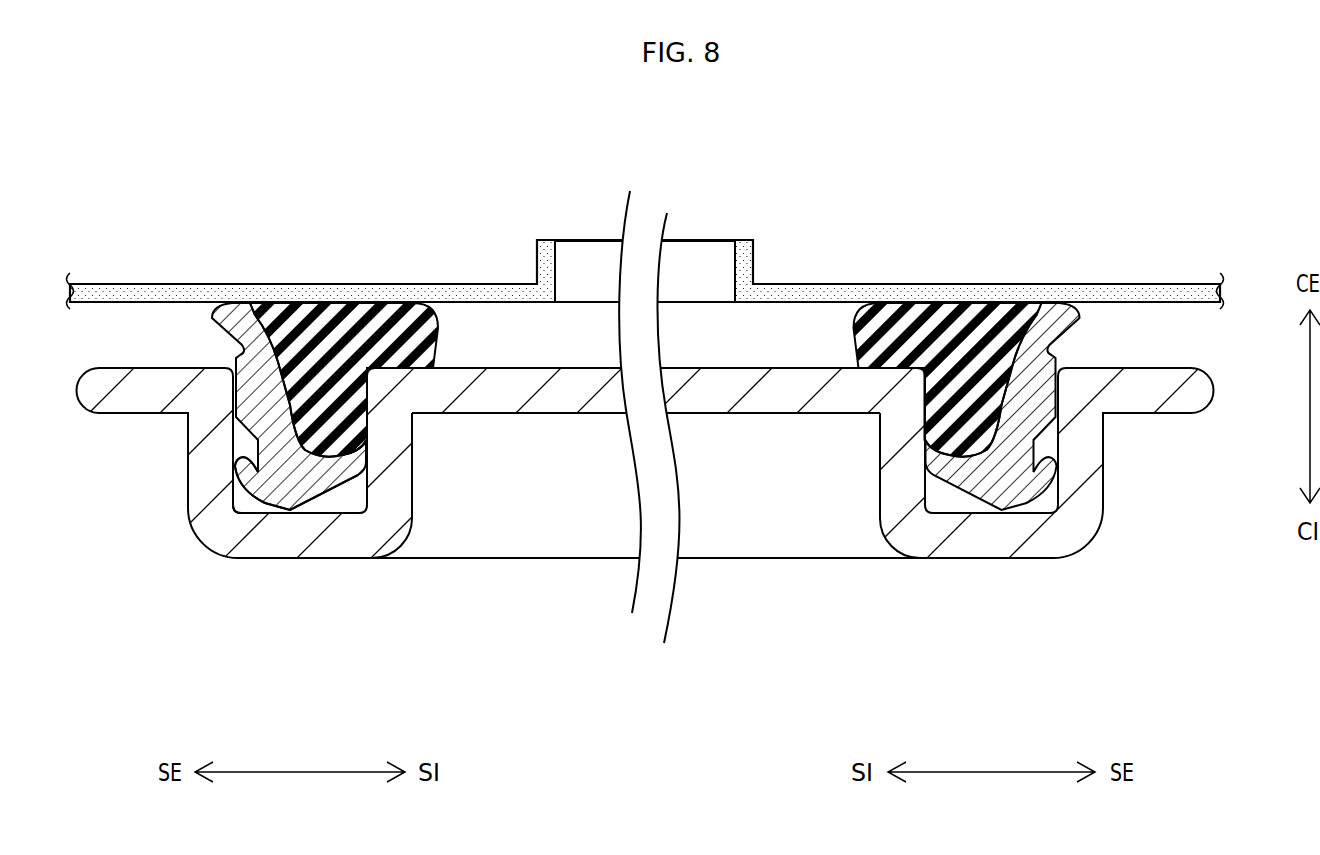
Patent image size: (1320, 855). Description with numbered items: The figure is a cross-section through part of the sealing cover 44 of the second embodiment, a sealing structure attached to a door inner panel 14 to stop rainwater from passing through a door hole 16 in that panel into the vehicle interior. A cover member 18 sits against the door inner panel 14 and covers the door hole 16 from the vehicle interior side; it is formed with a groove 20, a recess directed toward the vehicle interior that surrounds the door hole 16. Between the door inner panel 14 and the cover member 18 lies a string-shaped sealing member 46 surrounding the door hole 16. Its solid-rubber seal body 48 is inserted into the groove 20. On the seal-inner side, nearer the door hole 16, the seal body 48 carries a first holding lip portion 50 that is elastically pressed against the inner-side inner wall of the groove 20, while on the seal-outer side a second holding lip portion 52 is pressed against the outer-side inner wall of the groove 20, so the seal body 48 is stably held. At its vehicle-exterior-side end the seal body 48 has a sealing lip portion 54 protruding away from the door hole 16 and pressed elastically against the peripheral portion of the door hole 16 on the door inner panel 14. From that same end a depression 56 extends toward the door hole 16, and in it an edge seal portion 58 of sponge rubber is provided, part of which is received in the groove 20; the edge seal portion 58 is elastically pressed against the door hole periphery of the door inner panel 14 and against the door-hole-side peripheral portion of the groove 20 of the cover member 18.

The door inner panel 14 is at (1178, 290).
The door hole 16 is at (733, 258).
The cover member 18 is at (1013, 577).
The groove 20 is at (245, 505).
The sealing cover 44 is at (518, 621).
The sealing member 46 is at (971, 288).
The seal body 48 is at (313, 480).
The first holding lip portion 50 is at (949, 458).
The second holding lip portion 52 is at (240, 462).
The sealing lip portion 54 is at (233, 302).
The depression 56 is at (342, 455).
The edge seal portion 58 is at (360, 318).